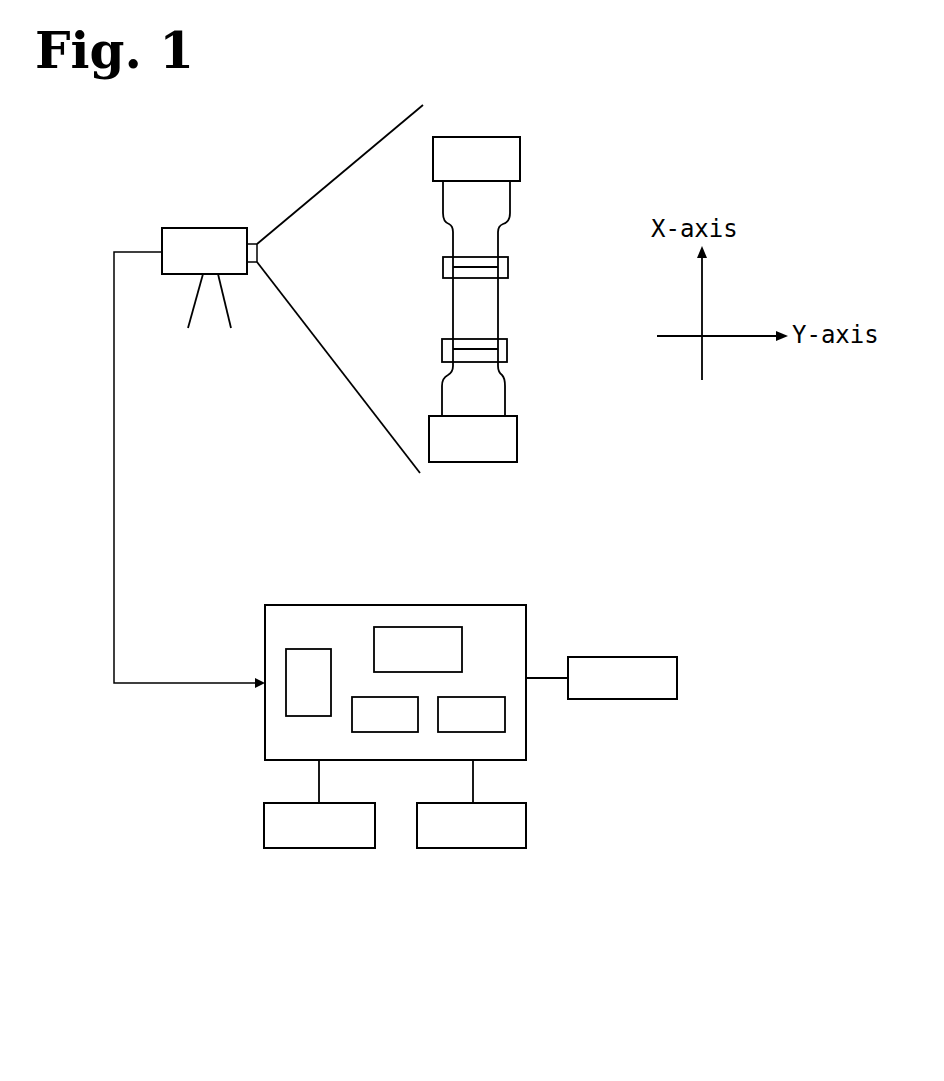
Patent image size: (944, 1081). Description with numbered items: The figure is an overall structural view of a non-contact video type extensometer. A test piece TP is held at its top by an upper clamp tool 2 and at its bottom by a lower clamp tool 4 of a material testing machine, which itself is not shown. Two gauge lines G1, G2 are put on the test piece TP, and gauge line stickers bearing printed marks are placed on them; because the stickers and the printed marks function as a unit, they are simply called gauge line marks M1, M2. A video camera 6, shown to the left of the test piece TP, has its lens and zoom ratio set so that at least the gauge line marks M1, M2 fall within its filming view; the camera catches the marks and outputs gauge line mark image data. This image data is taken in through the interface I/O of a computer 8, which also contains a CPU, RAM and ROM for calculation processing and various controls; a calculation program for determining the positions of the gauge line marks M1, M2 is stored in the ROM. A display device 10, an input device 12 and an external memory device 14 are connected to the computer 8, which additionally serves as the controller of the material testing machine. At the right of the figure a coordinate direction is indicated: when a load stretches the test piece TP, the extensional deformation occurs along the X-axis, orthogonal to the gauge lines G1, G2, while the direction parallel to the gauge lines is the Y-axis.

The upper clamp tool 2 is at (490, 137).
The lower clamp tool 4 is at (485, 462).
The video camera 6 is at (216, 228).
The computer 8 is at (478, 605).
The display device 10 is at (660, 657).
The input device 12 is at (332, 848).
The external memory device 14 is at (490, 848).
The test piece TP is at (510, 203).
The gauge line G1 is at (478, 267).
The gauge line G2 is at (478, 349).
The gauge line mark M1 is at (443, 272).
The gauge line mark M2 is at (442, 357).